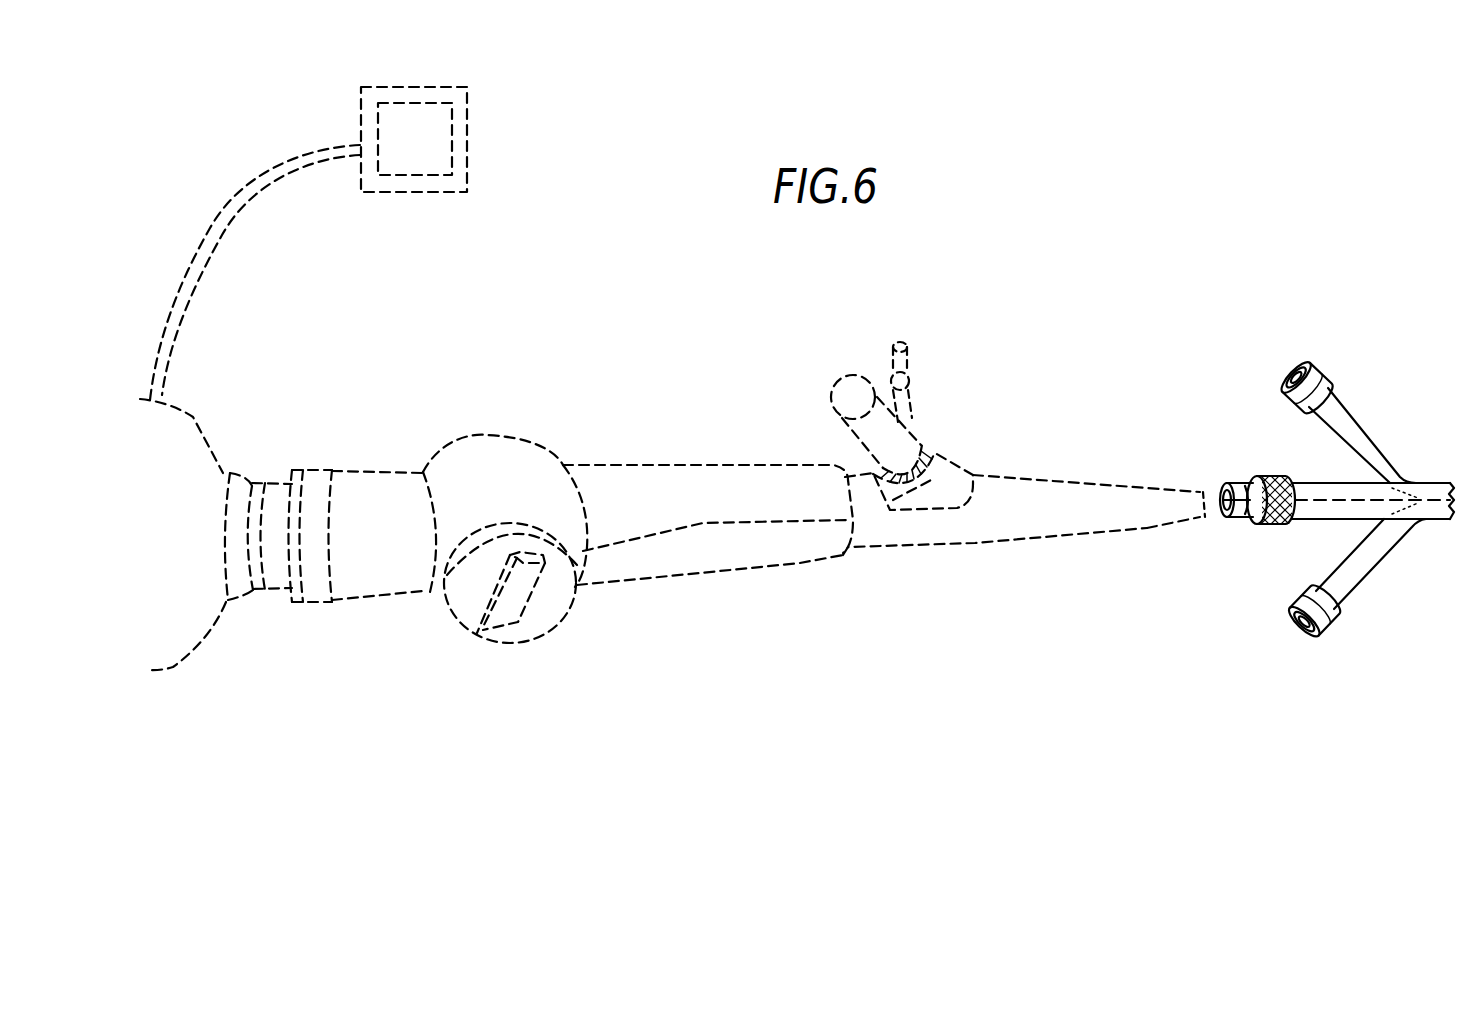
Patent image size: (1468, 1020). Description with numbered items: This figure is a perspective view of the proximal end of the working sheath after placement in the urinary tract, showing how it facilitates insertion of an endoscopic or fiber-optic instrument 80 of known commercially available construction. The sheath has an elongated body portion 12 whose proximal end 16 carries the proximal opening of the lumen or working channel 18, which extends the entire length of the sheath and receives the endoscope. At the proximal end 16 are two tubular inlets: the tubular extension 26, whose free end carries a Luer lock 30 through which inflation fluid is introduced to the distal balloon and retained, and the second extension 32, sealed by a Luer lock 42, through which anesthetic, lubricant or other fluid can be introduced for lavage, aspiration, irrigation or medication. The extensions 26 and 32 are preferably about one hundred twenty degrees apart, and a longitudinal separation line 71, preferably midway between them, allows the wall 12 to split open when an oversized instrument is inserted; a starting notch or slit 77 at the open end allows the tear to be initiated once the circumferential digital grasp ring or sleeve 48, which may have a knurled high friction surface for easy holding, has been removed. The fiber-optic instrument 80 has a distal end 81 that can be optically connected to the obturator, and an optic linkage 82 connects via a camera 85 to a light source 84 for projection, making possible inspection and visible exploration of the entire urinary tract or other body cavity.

The elongated body portion 12 is at (1437, 481).
The proximal end 16 is at (1333, 482).
The lumen or working channel 18 is at (1213, 510).
The tubular extension 26 is at (1345, 408).
The Luer lock 30 is at (1290, 393).
The extension 32 is at (1363, 570).
The Luer lock 42 is at (1303, 594).
The digital grasp ring or sleeve 48 is at (1262, 478).
The separation line 71 is at (1423, 505).
The starting notch or slit 77 is at (1208, 492).
The endoscopic or fiber-optic instrument 80 is at (714, 445).
The distal end 81 is at (1200, 505).
The optic linkage 82 is at (208, 248).
The light source 84 is at (386, 193).
The camera 85 is at (192, 417).